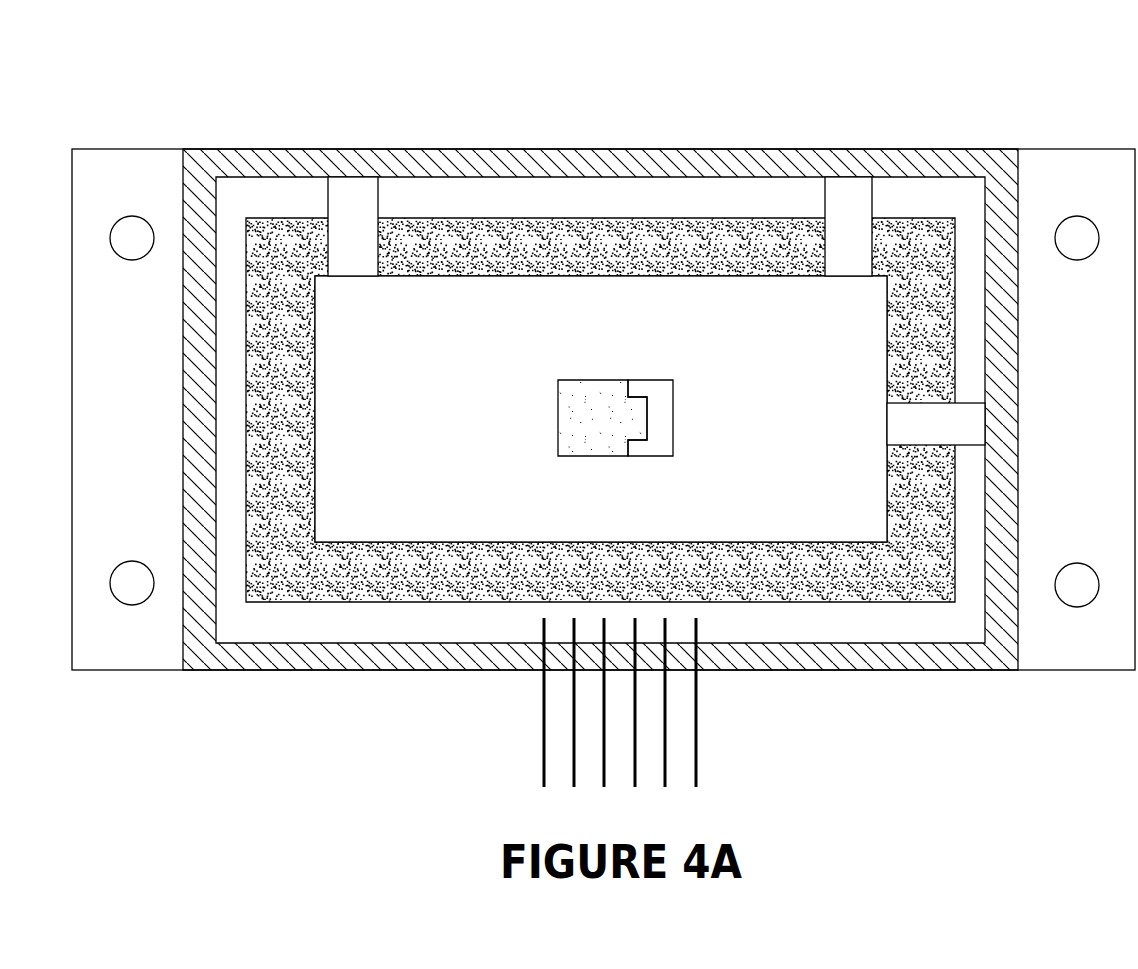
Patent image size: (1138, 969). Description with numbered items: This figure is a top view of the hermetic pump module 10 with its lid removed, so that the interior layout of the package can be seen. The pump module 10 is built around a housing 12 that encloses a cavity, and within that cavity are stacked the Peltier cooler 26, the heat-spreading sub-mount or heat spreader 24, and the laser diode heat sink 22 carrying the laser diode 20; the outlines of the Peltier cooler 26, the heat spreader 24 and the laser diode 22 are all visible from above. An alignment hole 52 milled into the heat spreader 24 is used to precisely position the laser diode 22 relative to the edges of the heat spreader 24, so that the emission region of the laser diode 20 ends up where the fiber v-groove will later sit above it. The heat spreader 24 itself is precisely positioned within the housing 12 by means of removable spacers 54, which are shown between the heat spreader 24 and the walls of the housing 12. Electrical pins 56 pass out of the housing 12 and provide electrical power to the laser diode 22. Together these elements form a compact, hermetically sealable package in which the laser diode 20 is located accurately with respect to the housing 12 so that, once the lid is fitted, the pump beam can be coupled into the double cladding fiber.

The pump module 10 is at (21, 73).
The housing 12 is at (699, 148).
The laser diode 20 is at (609, 379).
The laser diode heat sink 22 is at (558, 433).
The heat-spreading sub-mount 24 is at (338, 293).
The Peltier cooler 26 is at (947, 220).
The alignment hole 52 is at (665, 399).
The removable spacers 54 is at (852, 190).
The electrical pins 56 is at (542, 742).